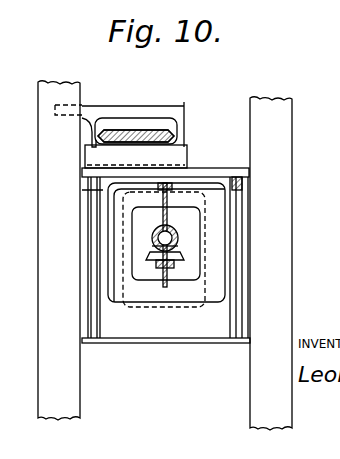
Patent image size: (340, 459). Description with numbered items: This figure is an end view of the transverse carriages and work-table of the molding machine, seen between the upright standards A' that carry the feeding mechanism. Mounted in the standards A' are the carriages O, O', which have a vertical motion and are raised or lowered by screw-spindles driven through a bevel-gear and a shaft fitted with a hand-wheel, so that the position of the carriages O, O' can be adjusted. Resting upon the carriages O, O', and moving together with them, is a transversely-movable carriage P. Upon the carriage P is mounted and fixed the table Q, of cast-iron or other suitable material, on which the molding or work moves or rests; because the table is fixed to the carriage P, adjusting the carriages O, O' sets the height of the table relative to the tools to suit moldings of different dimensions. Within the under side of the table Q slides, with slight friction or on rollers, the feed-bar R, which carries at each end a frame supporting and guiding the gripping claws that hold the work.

The standard A' is at (165, 255).
The table Q is at (136, 108).
The feed-bar R is at (100, 132).
The transversely-movable carriage P is at (188, 161).
The carriage O is at (166, 258).
The carriage O' is at (172, 244).